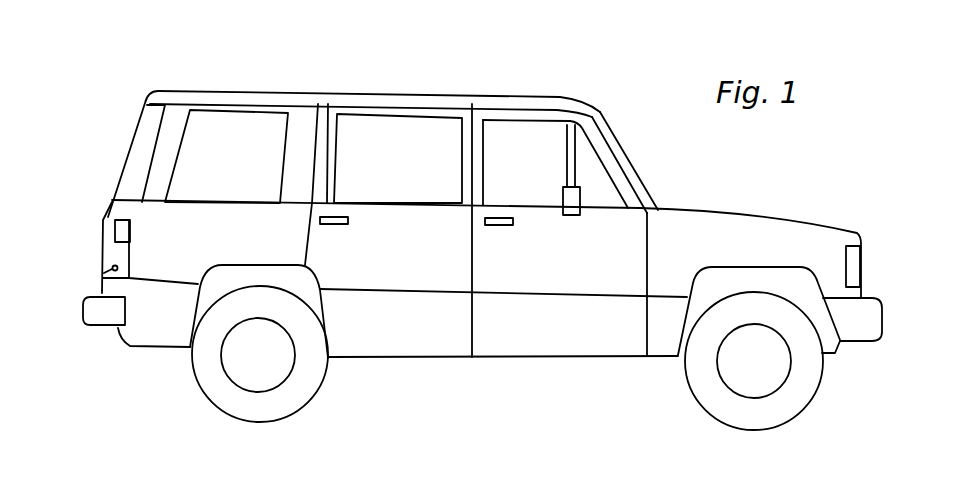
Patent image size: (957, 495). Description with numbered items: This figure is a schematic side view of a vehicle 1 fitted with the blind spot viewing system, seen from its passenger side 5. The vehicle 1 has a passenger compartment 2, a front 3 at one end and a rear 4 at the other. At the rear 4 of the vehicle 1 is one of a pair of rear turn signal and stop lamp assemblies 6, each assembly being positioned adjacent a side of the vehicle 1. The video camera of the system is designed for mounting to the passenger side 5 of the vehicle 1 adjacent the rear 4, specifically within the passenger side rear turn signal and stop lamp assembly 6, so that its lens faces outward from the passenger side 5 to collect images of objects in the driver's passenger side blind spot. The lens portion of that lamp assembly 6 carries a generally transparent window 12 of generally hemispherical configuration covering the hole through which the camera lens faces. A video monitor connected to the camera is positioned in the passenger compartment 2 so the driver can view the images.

The vehicle 1 is at (289, 92).
The passenger compartment 2 is at (548, 135).
The front 3 is at (860, 268).
The rear 4 is at (103, 290).
The passenger side 5 is at (440, 327).
The rear turn signal and stop lamp assembly 6 is at (115, 243).
The window 12 is at (112, 268).